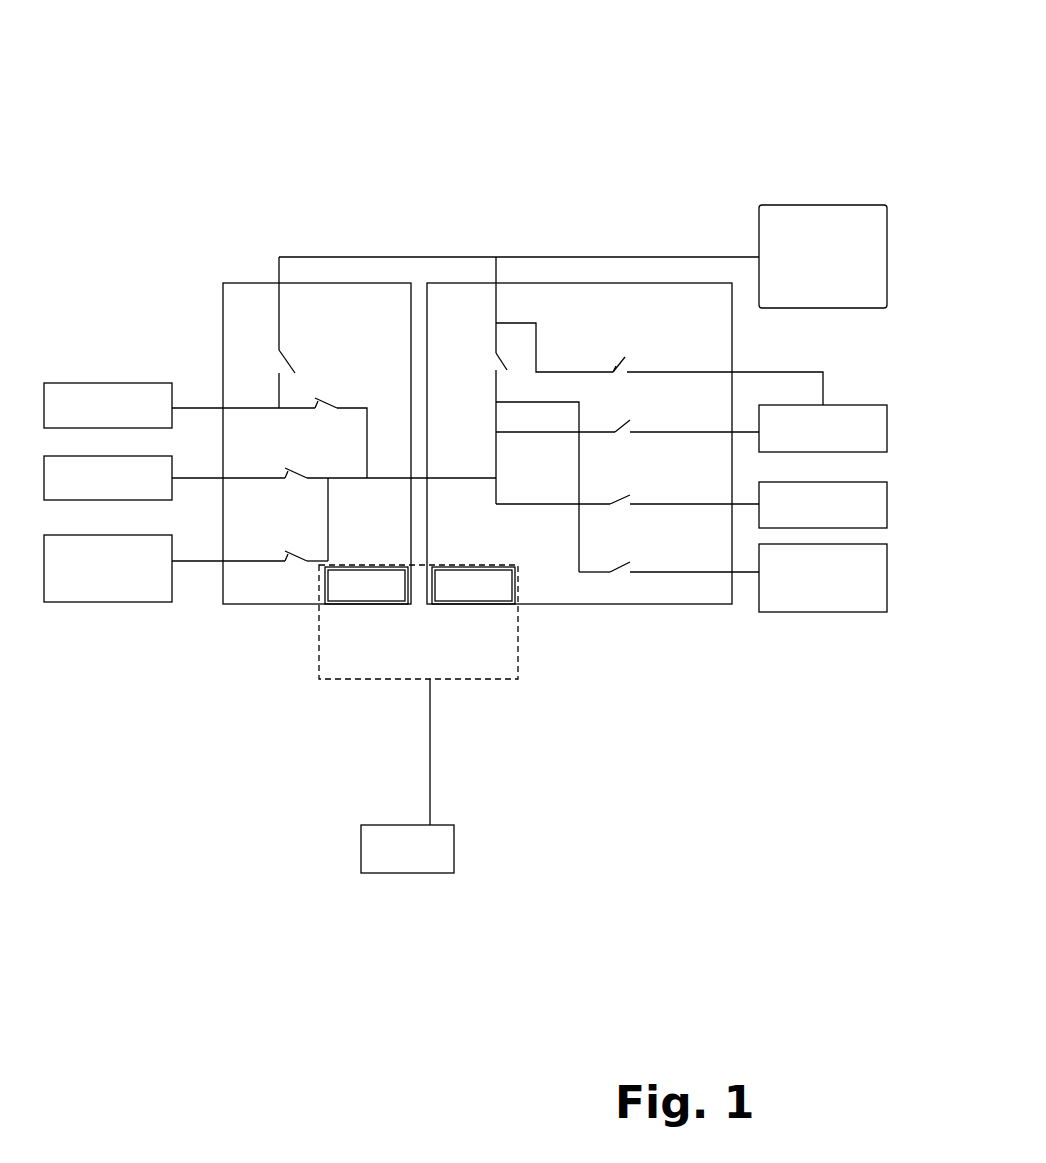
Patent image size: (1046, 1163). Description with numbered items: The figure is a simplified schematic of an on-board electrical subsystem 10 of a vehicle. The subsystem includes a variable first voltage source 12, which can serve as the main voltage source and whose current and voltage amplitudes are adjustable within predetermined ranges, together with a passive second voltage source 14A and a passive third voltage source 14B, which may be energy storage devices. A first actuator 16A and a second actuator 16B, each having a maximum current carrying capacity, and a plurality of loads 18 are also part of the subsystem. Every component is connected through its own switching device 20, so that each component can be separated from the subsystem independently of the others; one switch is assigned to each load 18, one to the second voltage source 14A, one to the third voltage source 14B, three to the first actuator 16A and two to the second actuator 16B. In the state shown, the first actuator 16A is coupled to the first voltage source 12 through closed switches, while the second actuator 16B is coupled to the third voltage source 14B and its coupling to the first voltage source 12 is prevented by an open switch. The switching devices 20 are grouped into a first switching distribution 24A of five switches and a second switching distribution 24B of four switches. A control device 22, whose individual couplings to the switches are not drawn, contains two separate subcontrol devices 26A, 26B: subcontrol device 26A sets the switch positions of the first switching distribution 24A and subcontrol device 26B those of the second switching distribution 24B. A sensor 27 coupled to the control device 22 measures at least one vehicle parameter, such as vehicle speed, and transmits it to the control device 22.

The on-board electrical subsystem 10 is at (517, 148).
The first voltage source 12 is at (803, 205).
The second voltage source 14A is at (889, 590).
The third voltage source 14B is at (135, 602).
The first actuator 16A is at (847, 405).
The second actuator 16B is at (90, 383).
The load 18 is at (887, 515).
The switching device 20 is at (617, 363).
The control device 22 is at (388, 679).
The first switching distribution 24A is at (677, 605).
The second switching distribution 24B is at (255, 283).
The subcontrol device 26A is at (493, 605).
The subcontrol device 26B is at (367, 605).
The sensor 27 is at (361, 853).